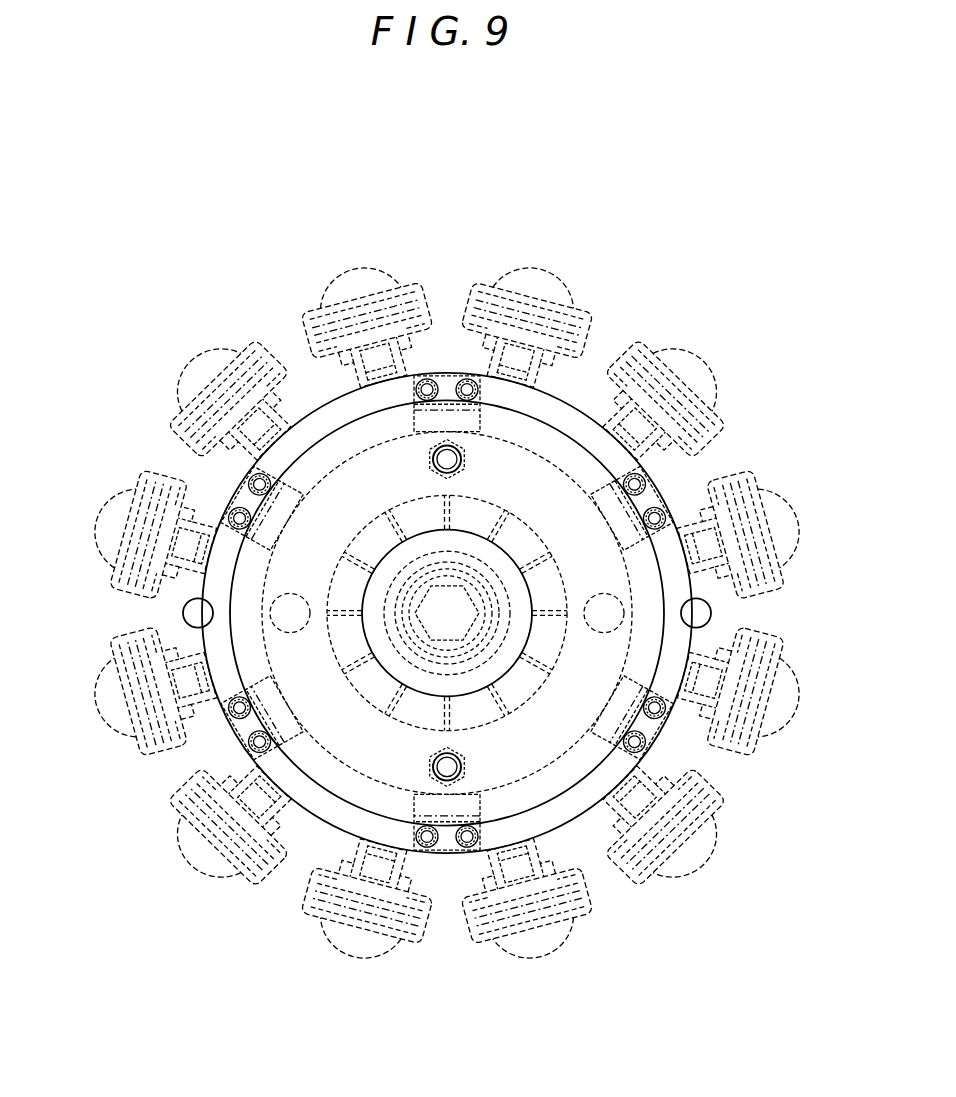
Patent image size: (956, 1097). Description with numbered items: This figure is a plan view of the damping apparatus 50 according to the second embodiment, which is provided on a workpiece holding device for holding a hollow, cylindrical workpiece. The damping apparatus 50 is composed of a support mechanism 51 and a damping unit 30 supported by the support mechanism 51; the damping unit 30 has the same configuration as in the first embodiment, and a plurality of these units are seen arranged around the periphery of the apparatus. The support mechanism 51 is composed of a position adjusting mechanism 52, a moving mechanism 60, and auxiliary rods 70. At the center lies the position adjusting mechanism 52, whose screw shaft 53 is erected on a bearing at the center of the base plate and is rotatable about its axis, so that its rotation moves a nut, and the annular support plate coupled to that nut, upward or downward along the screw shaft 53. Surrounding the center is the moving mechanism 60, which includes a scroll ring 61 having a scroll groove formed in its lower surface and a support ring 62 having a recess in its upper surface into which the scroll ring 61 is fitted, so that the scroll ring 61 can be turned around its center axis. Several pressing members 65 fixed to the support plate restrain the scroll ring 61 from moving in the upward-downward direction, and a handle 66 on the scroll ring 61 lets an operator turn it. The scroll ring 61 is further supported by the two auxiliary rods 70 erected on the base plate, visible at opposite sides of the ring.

The damping apparatus 50 is at (422, 216).
The damping unit 30 is at (700, 370).
The support mechanism 51 is at (358, 496).
The position adjusting mechanism 52 is at (489, 547).
The screw shaft 53 is at (462, 622).
The moving mechanism 60 is at (380, 444).
The scroll ring 61 is at (342, 440).
The support ring 62 is at (222, 548).
The pressing members 65 is at (660, 490).
The handle 66 is at (442, 450).
The auxiliary rods 70 is at (186, 613).